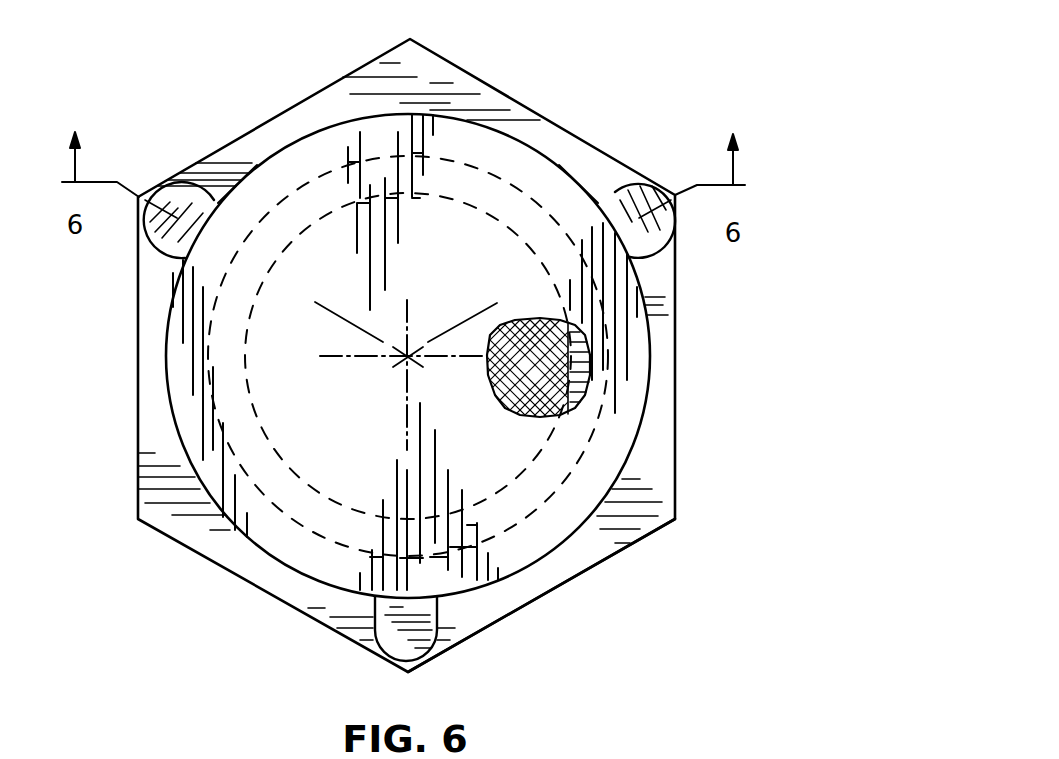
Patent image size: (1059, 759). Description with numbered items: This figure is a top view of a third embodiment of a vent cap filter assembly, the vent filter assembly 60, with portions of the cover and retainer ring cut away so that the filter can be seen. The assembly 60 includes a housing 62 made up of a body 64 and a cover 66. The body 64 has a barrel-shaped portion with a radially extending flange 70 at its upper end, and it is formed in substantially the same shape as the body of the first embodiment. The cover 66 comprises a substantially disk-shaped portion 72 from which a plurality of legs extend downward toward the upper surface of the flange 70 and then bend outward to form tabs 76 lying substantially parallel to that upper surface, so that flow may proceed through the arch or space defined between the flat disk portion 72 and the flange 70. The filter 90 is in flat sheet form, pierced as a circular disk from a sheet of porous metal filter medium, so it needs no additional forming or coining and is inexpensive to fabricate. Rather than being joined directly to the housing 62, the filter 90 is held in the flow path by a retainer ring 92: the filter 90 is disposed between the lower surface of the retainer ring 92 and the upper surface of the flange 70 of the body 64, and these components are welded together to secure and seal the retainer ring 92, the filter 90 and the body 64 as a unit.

The vent filter assembly 60 is at (570, 82).
The housing 62 is at (675, 453).
The body 64 is at (663, 387).
The cover 66 is at (575, 178).
The flange 70 is at (590, 562).
The disk-shaped portion 72 is at (257, 165).
The tabs 76 is at (425, 650).
The filter 90 is at (570, 345).
The retainer ring 92 is at (560, 400).